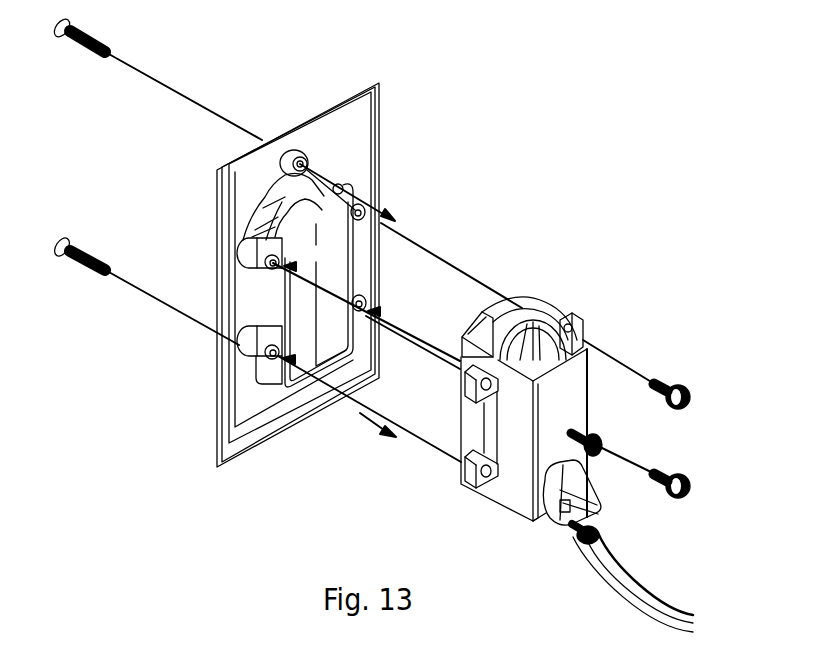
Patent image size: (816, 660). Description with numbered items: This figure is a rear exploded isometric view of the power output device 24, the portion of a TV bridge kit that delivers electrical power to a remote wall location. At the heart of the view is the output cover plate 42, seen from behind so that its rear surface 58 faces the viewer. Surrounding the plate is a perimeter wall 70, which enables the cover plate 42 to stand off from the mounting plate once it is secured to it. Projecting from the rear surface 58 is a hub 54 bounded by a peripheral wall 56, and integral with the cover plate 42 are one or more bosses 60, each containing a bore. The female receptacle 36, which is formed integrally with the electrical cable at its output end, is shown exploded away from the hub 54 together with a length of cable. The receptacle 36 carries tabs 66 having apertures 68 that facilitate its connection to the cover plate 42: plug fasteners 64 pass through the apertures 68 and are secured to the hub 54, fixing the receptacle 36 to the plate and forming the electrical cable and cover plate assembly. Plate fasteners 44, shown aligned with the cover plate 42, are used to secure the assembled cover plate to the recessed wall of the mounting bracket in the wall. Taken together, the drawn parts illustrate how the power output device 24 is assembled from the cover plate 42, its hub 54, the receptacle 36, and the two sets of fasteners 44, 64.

The power output device 24 is at (516, 196).
The female receptacle 36 is at (510, 517).
The output cover plate 42 is at (287, 433).
The plate fasteners 44 is at (80, 267).
The hub 54 is at (250, 205).
The peripheral wall 56 is at (274, 370).
The rear surface 58 is at (344, 158).
The bosses 60 is at (380, 284).
The plug fasteners 64 is at (668, 383).
The tabs 66 is at (570, 318).
The apertures 68 is at (583, 327).
The perimeter wall 70 is at (372, 128).